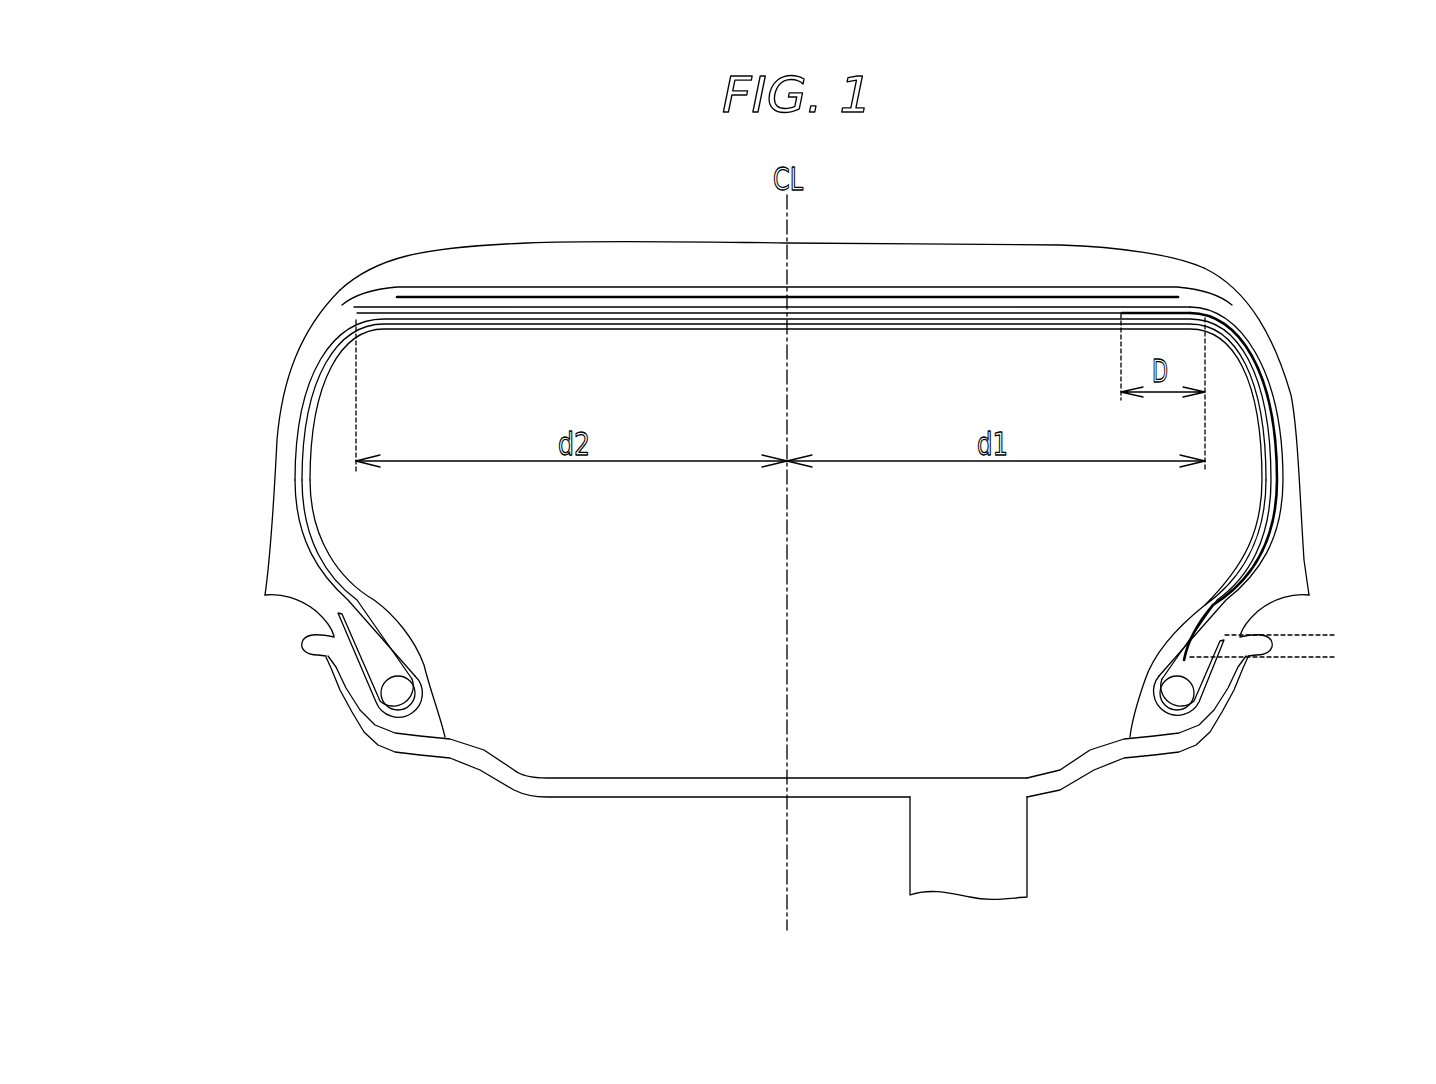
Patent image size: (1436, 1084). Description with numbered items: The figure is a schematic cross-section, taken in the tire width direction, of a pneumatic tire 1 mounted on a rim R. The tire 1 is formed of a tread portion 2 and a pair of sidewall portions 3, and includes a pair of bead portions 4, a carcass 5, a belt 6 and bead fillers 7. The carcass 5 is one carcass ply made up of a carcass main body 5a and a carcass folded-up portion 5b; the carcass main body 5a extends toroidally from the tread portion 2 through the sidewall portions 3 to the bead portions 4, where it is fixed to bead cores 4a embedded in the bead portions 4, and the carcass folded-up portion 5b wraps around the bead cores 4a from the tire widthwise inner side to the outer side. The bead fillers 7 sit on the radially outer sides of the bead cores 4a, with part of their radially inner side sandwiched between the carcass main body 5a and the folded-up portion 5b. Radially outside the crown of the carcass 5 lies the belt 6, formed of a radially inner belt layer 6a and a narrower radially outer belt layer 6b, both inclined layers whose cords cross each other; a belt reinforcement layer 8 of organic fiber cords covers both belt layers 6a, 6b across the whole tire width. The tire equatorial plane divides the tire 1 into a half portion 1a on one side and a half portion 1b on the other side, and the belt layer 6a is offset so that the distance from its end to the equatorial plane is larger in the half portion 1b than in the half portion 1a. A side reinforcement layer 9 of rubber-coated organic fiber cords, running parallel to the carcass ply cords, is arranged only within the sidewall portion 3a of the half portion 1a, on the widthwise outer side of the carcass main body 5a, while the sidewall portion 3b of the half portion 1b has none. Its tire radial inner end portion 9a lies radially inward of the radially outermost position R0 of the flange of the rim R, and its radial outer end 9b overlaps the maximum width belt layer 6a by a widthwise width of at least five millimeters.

The pneumatic tire 1 is at (785, 377).
The half portion on one side 1a is at (1126, 226).
The half portion on the other side 1b is at (491, 225).
The tread portion 2 is at (868, 236).
The sidewall portions 3 is at (785, 431).
The sidewall portion on one side 3a is at (1300, 478).
The sidewall portion on the other side 3b is at (272, 478).
The bead portions 4 is at (781, 704).
The bead cores 4a is at (398, 693).
The carcass 5 is at (776, 480).
The carcass main body 5a is at (330, 350).
The carcass folded-up portion 5b is at (352, 608).
The belt 6 is at (772, 218).
The belt layer 6a is at (582, 305).
The belt layer 6b is at (637, 292).
The bead fillers 7 is at (380, 660).
The belt reinforcement layer 8 is at (1003, 285).
The side reinforcement layer 9 is at (1182, 492).
The tire radial inner end portion 9a is at (1183, 662).
The tire radial outer end 9b is at (1115, 313).
The rim R is at (1232, 700).
The tire radial outermost position of a flange R0 is at (1270, 634).